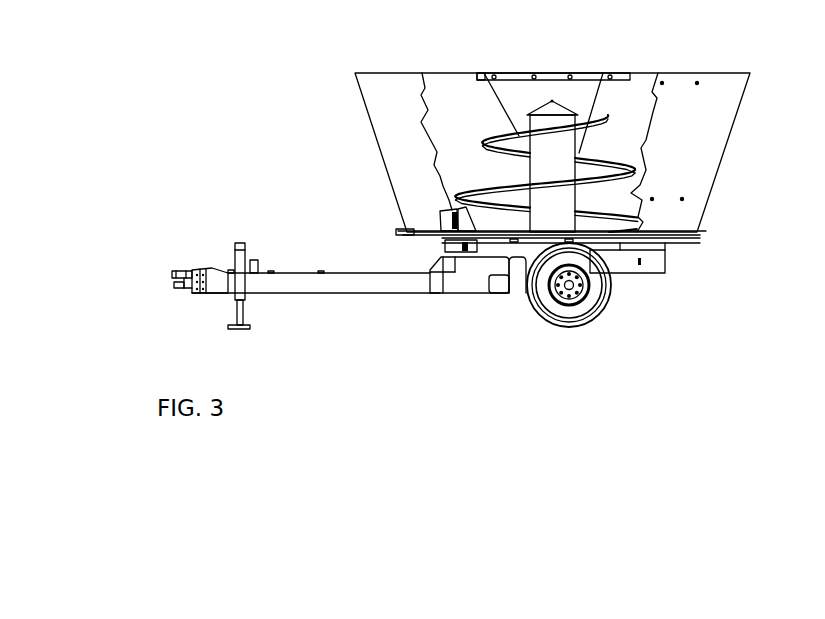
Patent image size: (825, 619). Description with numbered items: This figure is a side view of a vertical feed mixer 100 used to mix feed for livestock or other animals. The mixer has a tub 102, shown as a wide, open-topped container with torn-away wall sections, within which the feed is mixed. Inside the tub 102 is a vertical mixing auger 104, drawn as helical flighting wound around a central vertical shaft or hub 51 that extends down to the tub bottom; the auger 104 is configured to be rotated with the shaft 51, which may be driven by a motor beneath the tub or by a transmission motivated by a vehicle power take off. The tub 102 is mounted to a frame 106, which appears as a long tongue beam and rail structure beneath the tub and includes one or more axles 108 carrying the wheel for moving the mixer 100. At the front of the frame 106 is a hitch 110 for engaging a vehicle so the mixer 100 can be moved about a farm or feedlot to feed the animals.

The vertical feed mixer 100 is at (382, 51).
The tub 102 is at (700, 124).
The vertical mixing auger 104 is at (497, 135).
The vertical shaft or hub 51 is at (557, 108).
The frame 106 is at (347, 275).
The axle 108 is at (585, 313).
The hitch 110 is at (178, 286).